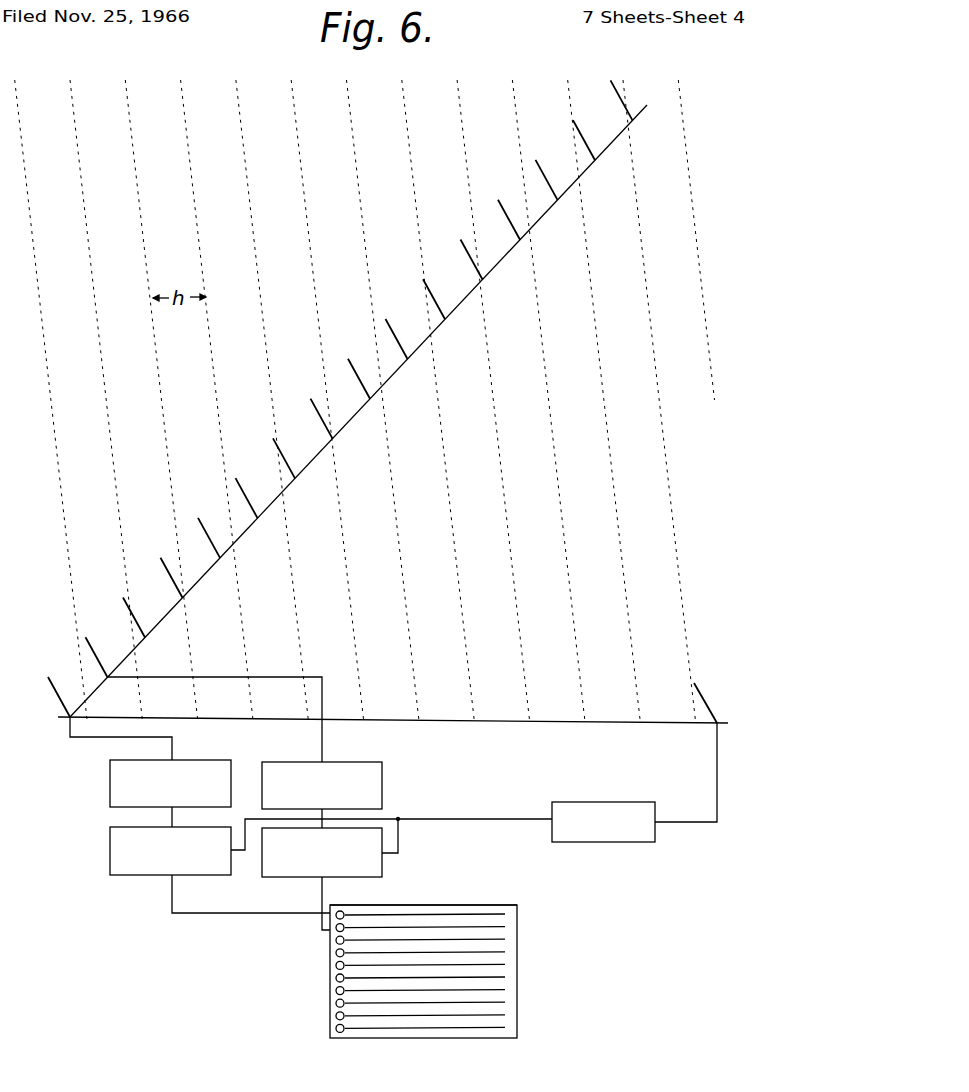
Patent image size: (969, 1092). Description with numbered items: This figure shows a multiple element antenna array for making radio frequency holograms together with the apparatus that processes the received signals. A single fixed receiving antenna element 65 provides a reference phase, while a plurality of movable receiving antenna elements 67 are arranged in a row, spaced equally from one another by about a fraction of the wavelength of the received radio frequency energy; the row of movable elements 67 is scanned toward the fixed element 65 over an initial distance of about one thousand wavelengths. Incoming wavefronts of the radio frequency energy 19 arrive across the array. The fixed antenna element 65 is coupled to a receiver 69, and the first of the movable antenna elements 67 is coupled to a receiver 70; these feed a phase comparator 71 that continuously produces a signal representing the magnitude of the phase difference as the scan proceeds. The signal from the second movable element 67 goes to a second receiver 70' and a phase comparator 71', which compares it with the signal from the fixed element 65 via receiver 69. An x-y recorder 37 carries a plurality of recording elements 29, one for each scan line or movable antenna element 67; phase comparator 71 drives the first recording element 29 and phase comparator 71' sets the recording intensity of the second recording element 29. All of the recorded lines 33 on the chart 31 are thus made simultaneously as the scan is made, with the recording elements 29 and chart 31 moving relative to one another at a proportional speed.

The sound wavefronts 19 is at (141, 233).
The movable receiving antenna elements 67 is at (389, 338).
The fixed receiving antenna element 65 is at (708, 707).
The receiver 69 is at (602, 803).
The receiver 70 is at (151, 783).
The second receiver 70' is at (350, 785).
The phase comparator 71 is at (149, 851).
The phase comparator 71' is at (321, 866).
The x-y recorder 37 is at (326, 1013).
The chart 31 is at (409, 899).
The recording elements 29 is at (334, 941).
The recorded lines 33 is at (481, 914).